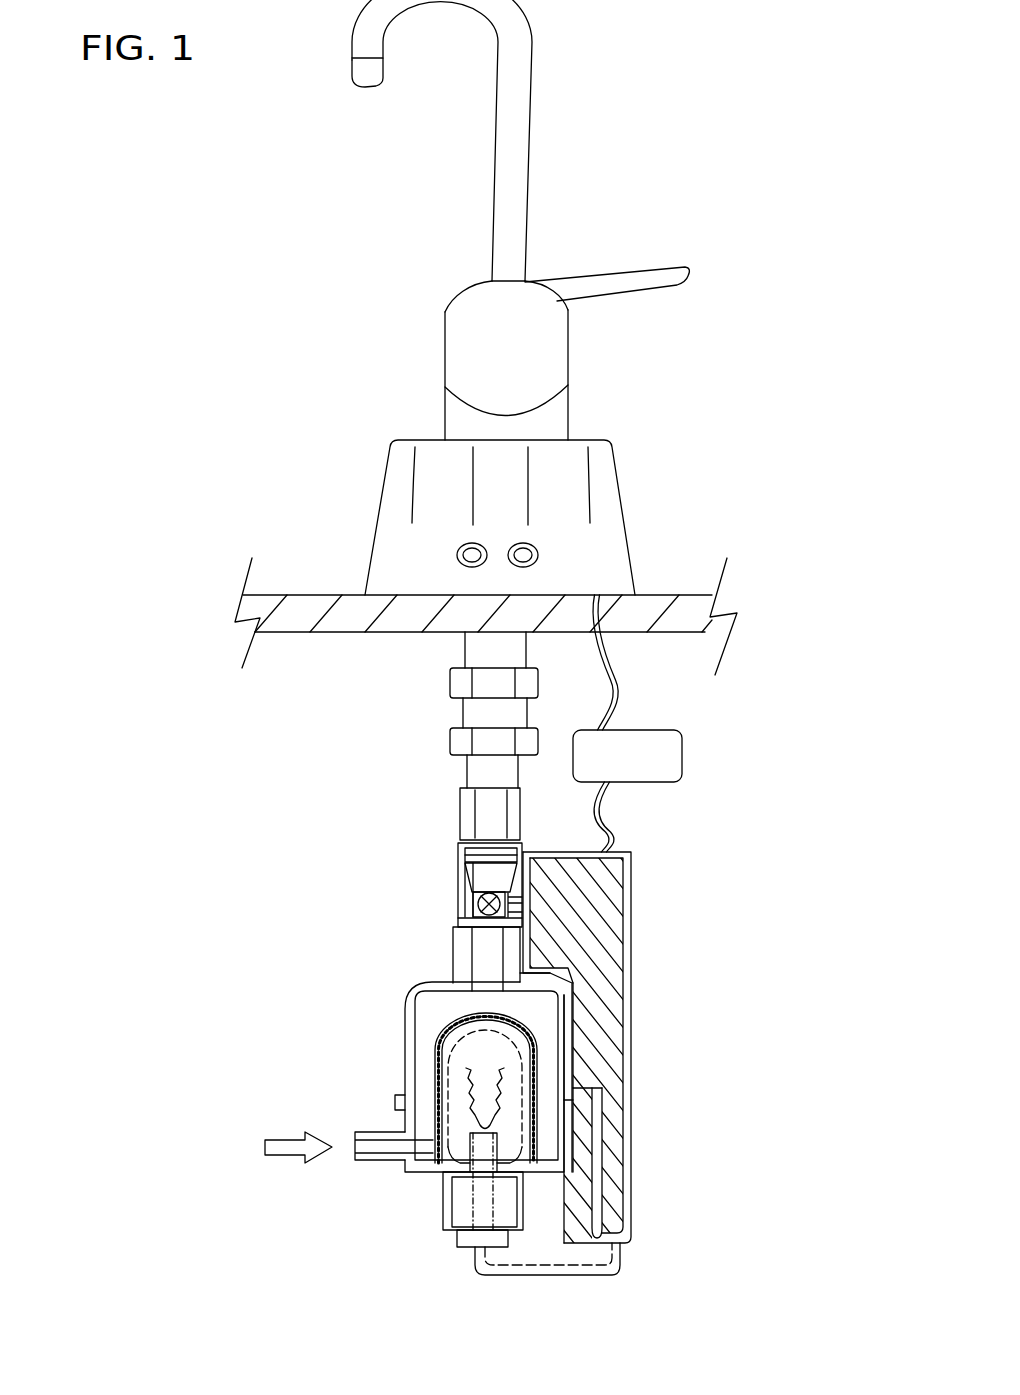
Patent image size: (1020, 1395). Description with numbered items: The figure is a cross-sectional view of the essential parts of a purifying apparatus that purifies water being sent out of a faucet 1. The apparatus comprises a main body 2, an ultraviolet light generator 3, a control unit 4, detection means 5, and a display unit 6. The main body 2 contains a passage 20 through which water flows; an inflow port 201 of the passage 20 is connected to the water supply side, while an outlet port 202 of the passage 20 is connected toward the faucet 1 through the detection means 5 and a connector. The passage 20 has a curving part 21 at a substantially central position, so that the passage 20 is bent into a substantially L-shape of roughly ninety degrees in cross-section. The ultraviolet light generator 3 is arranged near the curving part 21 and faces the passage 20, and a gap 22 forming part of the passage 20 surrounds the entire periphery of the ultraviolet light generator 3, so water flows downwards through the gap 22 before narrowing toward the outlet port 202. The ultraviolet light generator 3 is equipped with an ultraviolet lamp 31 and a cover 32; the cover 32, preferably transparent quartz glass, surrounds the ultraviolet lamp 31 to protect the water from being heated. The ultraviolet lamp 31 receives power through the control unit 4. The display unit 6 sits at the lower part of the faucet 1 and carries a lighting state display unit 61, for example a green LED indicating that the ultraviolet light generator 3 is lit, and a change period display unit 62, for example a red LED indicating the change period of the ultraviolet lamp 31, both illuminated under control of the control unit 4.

The faucet 1 is at (547, 277).
The main body 2 is at (418, 1092).
The passage 20 is at (433, 1010).
The inflow port 201 is at (350, 1148).
The outlet port 202 is at (483, 952).
The curving part 21 is at (542, 1142).
The gap 22 is at (548, 1043).
The ultraviolet light generator 3 is at (391, 1130).
The ultraviolet lamp 31 is at (457, 1068).
The cover 32 is at (433, 1123).
The control unit 4 is at (573, 1047).
The detection means 5 is at (453, 868).
The display unit 6 is at (457, 518).
The lighting state display unit 61 is at (455, 557).
The change period display unit 62 is at (505, 545).